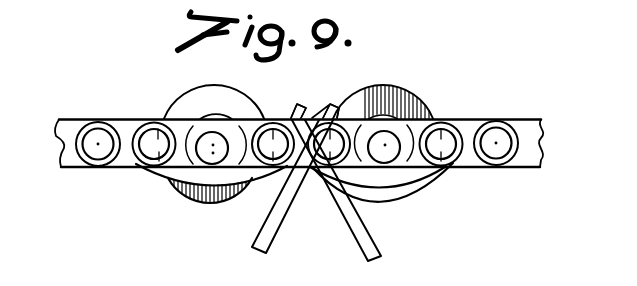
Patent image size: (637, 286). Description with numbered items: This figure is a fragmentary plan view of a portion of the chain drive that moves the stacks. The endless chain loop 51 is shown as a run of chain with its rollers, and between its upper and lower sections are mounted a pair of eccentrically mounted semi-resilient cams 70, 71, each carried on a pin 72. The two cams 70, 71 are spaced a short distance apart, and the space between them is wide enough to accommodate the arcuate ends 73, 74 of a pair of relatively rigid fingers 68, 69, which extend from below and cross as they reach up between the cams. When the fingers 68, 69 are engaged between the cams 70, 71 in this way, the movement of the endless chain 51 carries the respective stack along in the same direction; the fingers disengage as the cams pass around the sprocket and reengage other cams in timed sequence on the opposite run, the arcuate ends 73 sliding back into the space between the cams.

The endless chain loop 51 is at (526, 128).
The finger 68 is at (256, 233).
The finger 69 is at (360, 242).
The eccentrically mounted semi-resilient cam 70 is at (190, 103).
The eccentrically mounted semi-resilient cam 71 is at (408, 95).
The pin 72 is at (208, 165).
The arcuate end 73 is at (296, 108).
The arcuate end 74 is at (334, 101).